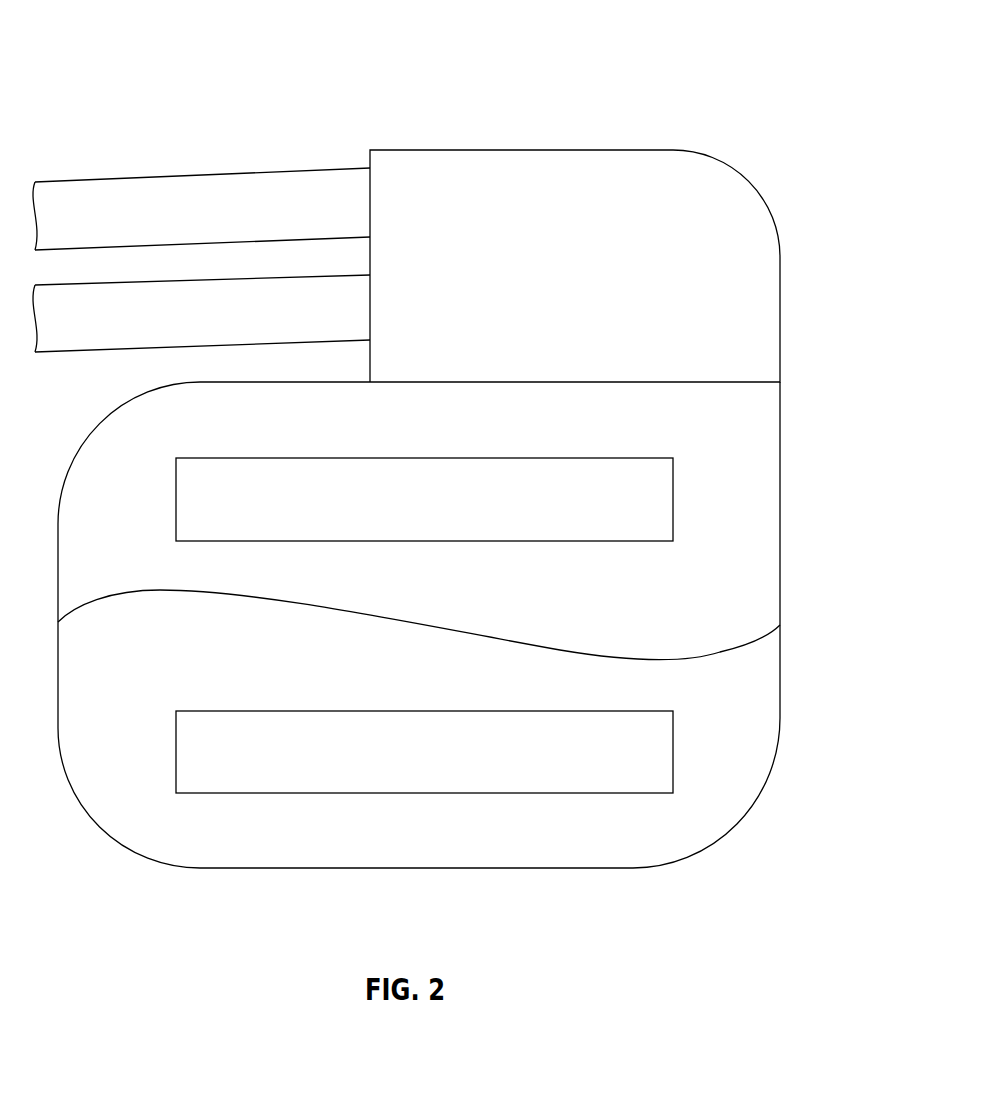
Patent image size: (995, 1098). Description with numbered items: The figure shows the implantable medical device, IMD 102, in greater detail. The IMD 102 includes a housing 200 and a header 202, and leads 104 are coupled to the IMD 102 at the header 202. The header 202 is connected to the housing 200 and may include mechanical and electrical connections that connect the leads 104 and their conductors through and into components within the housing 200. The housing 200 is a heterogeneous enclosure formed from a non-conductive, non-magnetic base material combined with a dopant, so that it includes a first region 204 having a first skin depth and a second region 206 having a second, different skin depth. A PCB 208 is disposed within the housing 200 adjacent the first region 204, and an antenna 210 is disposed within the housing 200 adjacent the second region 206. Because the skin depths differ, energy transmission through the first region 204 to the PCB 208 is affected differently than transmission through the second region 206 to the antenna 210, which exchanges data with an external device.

The IMD 102 is at (625, 52).
The leads 104 is at (197, 167).
The housing 200 is at (456, 870).
The header 202 is at (740, 255).
The first region 204 is at (419, 619).
The second region 206 is at (274, 659).
The PCB 208 is at (424, 499).
The antenna 210 is at (424, 752).